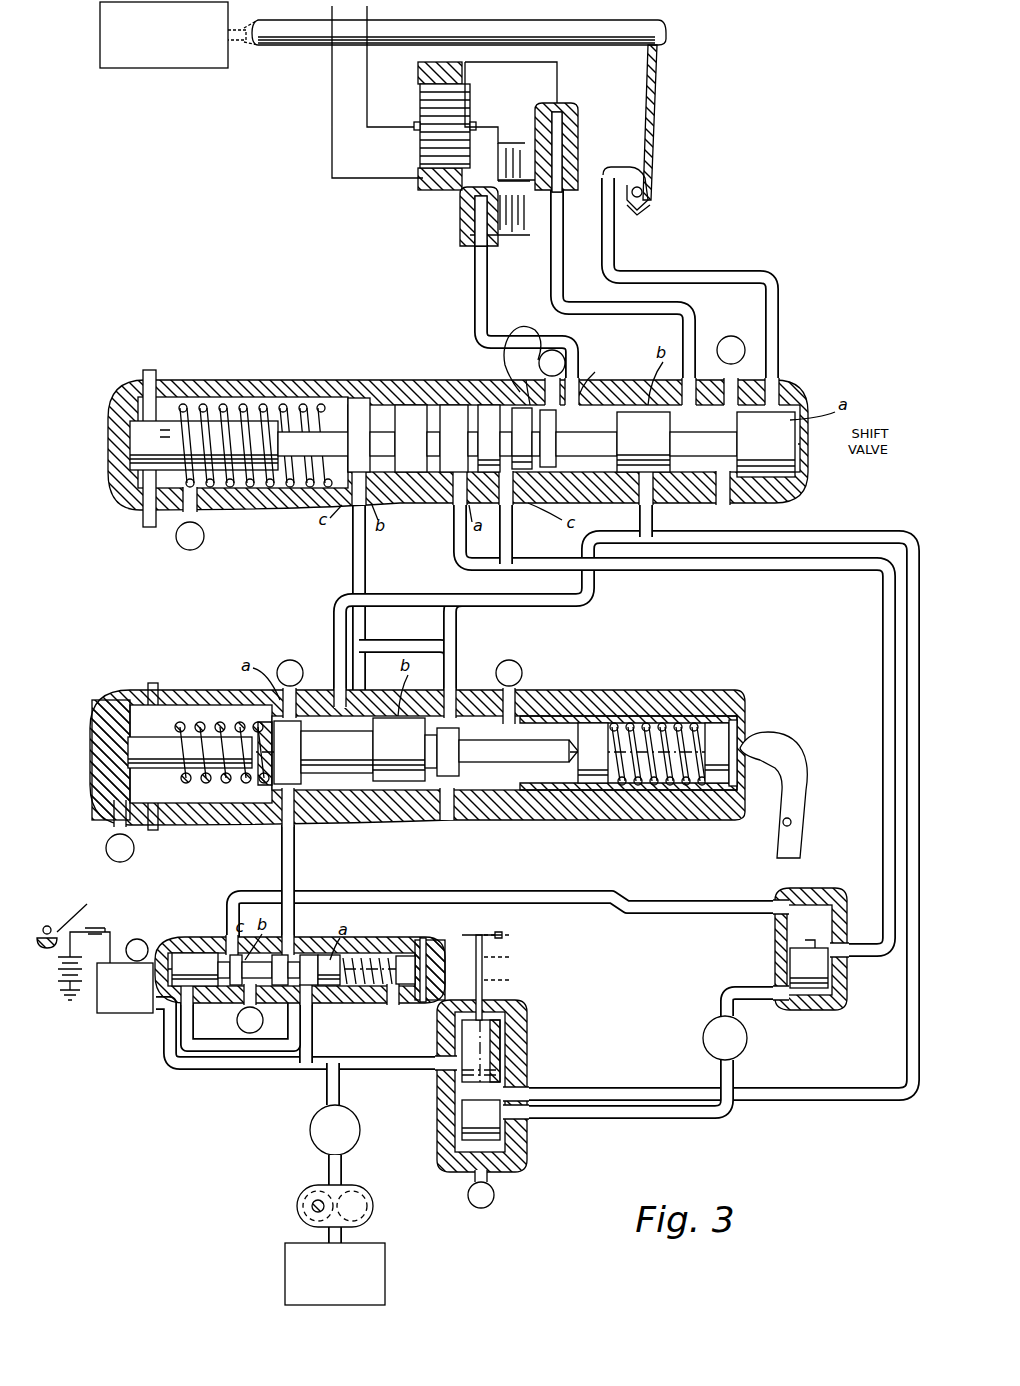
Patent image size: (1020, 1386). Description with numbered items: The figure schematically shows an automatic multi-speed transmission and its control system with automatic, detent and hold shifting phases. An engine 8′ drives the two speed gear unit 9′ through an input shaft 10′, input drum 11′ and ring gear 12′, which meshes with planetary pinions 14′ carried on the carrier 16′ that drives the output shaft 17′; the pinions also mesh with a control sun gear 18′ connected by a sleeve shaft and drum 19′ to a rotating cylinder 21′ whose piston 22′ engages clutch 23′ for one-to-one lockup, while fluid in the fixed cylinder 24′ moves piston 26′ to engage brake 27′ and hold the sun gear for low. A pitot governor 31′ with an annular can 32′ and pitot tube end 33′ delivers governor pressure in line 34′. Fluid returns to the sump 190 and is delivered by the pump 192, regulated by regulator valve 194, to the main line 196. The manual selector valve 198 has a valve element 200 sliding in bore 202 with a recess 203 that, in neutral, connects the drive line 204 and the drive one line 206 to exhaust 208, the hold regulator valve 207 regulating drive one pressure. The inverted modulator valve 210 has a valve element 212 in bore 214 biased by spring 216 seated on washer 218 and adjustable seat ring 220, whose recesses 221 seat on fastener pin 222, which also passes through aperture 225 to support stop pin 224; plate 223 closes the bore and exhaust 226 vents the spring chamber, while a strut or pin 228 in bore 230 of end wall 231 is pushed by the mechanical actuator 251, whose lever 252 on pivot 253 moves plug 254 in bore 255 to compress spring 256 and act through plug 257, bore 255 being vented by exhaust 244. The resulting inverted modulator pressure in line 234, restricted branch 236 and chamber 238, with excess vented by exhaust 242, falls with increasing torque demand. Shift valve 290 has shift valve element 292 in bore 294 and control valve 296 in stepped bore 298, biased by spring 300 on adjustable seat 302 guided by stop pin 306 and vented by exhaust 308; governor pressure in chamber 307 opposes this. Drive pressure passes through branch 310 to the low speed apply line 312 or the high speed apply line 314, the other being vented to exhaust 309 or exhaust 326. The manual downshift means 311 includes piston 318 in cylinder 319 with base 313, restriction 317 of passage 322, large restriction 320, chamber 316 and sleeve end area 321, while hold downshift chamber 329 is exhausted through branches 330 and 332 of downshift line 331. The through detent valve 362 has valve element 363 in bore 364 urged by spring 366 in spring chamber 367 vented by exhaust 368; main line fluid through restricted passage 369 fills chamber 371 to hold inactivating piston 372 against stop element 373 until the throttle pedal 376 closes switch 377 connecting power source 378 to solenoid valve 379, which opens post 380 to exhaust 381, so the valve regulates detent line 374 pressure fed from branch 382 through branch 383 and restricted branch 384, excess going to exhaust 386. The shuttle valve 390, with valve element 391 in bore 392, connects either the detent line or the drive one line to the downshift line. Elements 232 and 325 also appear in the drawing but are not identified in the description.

The engine 8′ is at (157, 62).
The two speed gear unit 9′ is at (295, 95).
The input shaft 10′ is at (325, 30).
The input drum 11′ is at (332, 108).
The ring gear 12′ is at (416, 183).
The planetary pinions 14′ is at (452, 115).
The carrier 16′ is at (405, 128).
The output shaft 17′ is at (663, 45).
The control sun gear 18′ is at (416, 68).
The sleeve shaft and drum 19′ is at (558, 72).
The rotating cylinder 21′ is at (576, 120).
The piston 22′ is at (565, 168).
The clutch 23′ is at (503, 146).
The fixed cylinder 24′ is at (466, 200).
The piston 26′ is at (478, 240).
The brake 27′ is at (518, 238).
The pitot governor 31′ is at (646, 220).
The annular can 32′ is at (652, 208).
The pitot tube end 33′ is at (646, 188).
The governor signal line 34′ is at (770, 272).
The sump 190 is at (292, 1262).
The input driven pump 192 is at (365, 1192).
The regulator valve 194 is at (326, 1095).
The main line 196 is at (418, 1072).
The manual selector valve 198 is at (572, 1025).
The valve element 200 is at (500, 1025).
The bore 202 is at (500, 1072).
The recess 203 is at (440, 1095).
The drive line 204 is at (878, 537).
The drive 1 line 206 is at (719, 994).
The hold regulator valve 207 is at (702, 1032).
The exhaust 208 is at (495, 1195).
The inverted modulator valve 210 is at (688, 655).
The valve element 212 is at (350, 790).
The bore 214 is at (285, 790).
The biasing spring 216 is at (200, 790).
The spring seat washer 218 is at (162, 830).
The adjustable spring seat ring 220 is at (112, 788).
The recesses 221 is at (110, 705).
The fastener pin 222 is at (150, 370).
The plate 223 is at (132, 495).
The stop pin 224 is at (190, 735).
The aperture 225 is at (126, 750).
The exhaust 226 is at (112, 862).
The force transmitting strut or pin 228 is at (490, 740).
The bore 230 is at (450, 800).
The end wall 231 is at (432, 835).
The line 232 is at (351, 648).
The inverted modulator line 234 is at (351, 540).
The restricted branch 236 is at (456, 652).
The chamber 238 is at (410, 785).
The exhaust 242 is at (275, 666).
The exhaust 244 is at (522, 664).
The mechanical actuator 251 is at (762, 720).
The lever 252 is at (788, 755).
The pivot 253 is at (792, 820).
The plug 254 is at (715, 722).
The bore 255 is at (645, 725).
The spring 256 is at (622, 722).
The slidable plug 257 is at (588, 722).
The shift valve 290 is at (365, 378).
The shift valve element 292 is at (628, 410).
The bore 294 is at (728, 503).
The control valve 296 is at (405, 408).
The three stepped bore 298 is at (450, 408).
The spring 300 is at (268, 405).
The adjustable seat 302 is at (190, 412).
The stop pin 306 is at (245, 480).
The closed chamber 307 is at (805, 395).
The exhaust 308 is at (186, 550).
The exhaust 309 is at (742, 345).
The branch 310 is at (644, 520).
The manual downshift means 311 is at (585, 314).
The low speed drive apply line 312 is at (476, 312).
The base 313 is at (643, 442).
The high speed drive apply line 314 is at (696, 318).
The chamber 316 is at (548, 480).
The intermediate size restriction portion 317 is at (586, 444).
The piston 318 is at (479, 438).
The cylinder 319 is at (590, 372).
The large restriction 320 is at (518, 470).
The sleeve end area 321 is at (470, 575).
The passage 322 is at (330, 400).
The passage 325 is at (505, 330).
The exhaust 326 is at (525, 370).
The hold downshift chamber 329 is at (538, 366).
The branch 330 is at (516, 540).
The downshift line 331 is at (708, 571).
The branch 332 is at (452, 562).
The through detent valve 362 is at (452, 938).
The valve element 363 is at (310, 952).
The bore 364 is at (358, 995).
The spring 366 is at (336, 952).
The spring chamber 367 is at (400, 952).
The exhaust 368 is at (440, 972).
The restricted passage 369 is at (187, 1030).
The chamber 371 is at (137, 939).
The inactivating piston 372 is at (196, 952).
The stop element 373 is at (428, 958).
The detent line 374 is at (490, 897).
The throttle pedal 376 is at (75, 914).
The switch 377 is at (100, 928).
The grounded power source 378 is at (58, 978).
The solenoid valve 379 is at (115, 1014).
The post 380 is at (186, 1010).
The exhaust 381 is at (110, 958).
The branch 382 is at (290, 1070).
The branch 383 is at (291, 895).
The restricted branch 384 is at (226, 905).
The exhaust 386 is at (246, 1027).
The shuttle valve 390 is at (770, 955).
The valve element 391 is at (830, 988).
The bore 392 is at (822, 912).